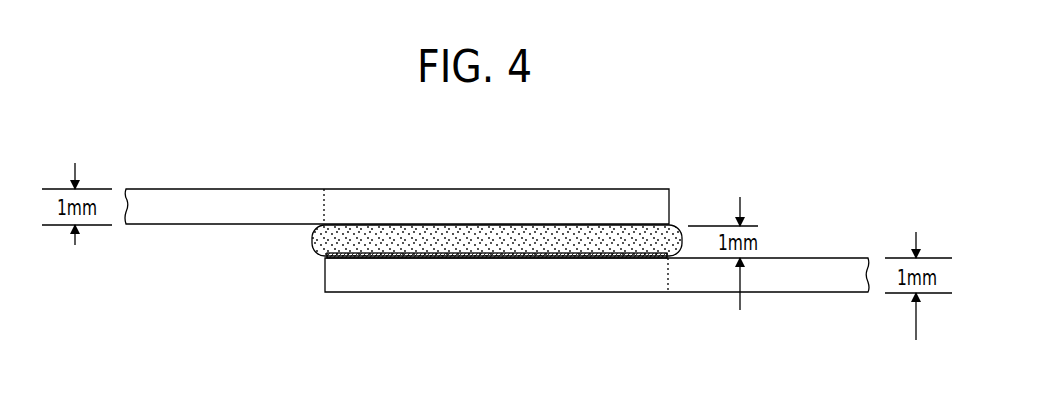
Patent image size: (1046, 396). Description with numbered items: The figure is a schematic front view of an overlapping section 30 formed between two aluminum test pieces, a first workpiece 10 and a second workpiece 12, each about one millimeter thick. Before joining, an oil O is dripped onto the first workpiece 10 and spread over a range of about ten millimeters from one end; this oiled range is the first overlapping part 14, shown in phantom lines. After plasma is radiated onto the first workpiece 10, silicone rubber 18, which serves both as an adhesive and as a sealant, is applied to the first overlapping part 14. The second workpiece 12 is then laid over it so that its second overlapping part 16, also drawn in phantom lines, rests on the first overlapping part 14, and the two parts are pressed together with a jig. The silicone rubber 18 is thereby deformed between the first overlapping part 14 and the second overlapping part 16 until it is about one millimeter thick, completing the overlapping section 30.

The overlapping section 30 is at (574, 188).
The second workpiece 12 is at (212, 200).
The second overlapping part 16 is at (414, 198).
The silicone rubber 18 is at (315, 242).
The oil O is at (523, 253).
The first overlapping part 14 is at (432, 285).
The first workpiece 10 is at (790, 286).